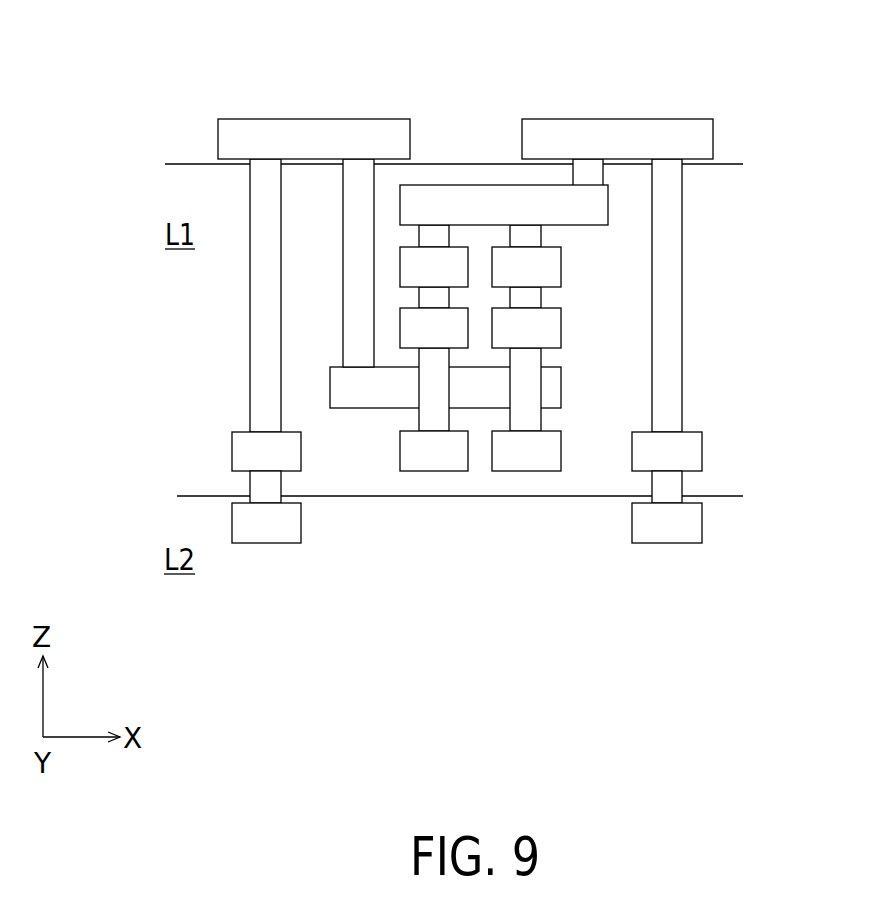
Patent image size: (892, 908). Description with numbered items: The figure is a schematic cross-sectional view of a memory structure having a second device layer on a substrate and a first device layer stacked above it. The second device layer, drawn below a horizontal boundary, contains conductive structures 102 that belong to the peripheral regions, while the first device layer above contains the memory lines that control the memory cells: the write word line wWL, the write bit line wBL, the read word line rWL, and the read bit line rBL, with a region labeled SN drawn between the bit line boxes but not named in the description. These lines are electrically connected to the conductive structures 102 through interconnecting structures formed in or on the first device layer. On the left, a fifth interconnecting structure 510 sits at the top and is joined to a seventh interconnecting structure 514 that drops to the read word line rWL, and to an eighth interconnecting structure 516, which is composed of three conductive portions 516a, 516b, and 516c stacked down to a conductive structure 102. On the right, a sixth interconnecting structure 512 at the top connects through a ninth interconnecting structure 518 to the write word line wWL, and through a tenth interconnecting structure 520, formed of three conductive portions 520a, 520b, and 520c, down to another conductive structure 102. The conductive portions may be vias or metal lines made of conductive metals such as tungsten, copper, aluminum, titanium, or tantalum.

The conductive structures 102 is at (265, 530).
The fifth interconnecting structure 510 is at (313, 138).
The sixth interconnecting structure 512 is at (633, 135).
The seventh interconnecting structure 514 is at (368, 187).
The ninth interconnecting structure 518 is at (590, 167).
The eighth interconnecting structure 516 is at (199, 331).
The conductive portion 516a is at (267, 328).
The conductive portion 516b is at (243, 448).
The conductive portion 516c is at (224, 459).
The tenth interconnecting structure 520 is at (734, 331).
The conductive portion 520a is at (666, 328).
The conductive portion 520b is at (692, 448).
The conductive portion 520c is at (709, 459).
The write word line wWL is at (605, 205).
The write bit line wBL is at (561, 274).
The storage node SN is at (522, 309).
The read word line rWL is at (561, 391).
The read bit line rBL is at (561, 453).